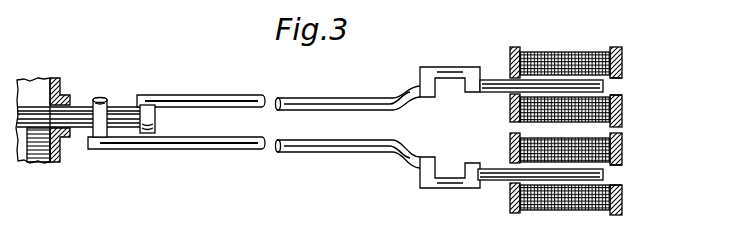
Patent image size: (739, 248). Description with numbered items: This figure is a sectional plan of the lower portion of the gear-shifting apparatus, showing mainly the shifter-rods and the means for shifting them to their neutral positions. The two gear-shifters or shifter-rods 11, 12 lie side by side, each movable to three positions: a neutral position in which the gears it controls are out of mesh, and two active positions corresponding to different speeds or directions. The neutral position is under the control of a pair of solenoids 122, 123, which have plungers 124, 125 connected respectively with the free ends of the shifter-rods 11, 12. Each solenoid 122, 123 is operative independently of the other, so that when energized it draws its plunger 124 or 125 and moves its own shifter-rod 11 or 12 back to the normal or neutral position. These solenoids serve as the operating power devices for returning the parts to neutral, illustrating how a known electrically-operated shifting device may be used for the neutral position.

The shifter-rod 11 is at (347, 103).
The shifter-rod 12 is at (362, 153).
The solenoid 122 is at (566, 80).
The solenoid 123 is at (566, 184).
The plunger 124 is at (603, 83).
The plunger 125 is at (603, 172).